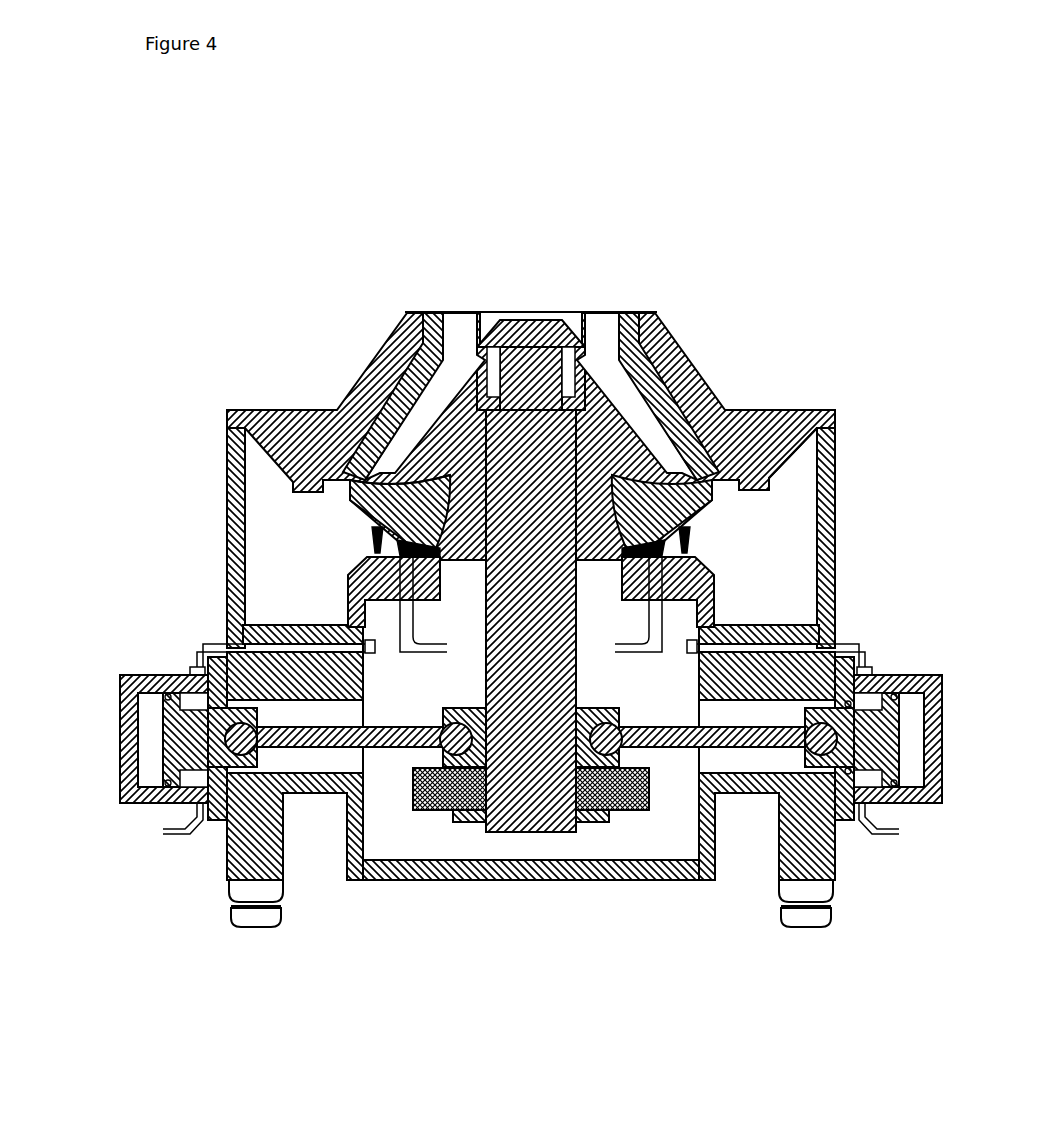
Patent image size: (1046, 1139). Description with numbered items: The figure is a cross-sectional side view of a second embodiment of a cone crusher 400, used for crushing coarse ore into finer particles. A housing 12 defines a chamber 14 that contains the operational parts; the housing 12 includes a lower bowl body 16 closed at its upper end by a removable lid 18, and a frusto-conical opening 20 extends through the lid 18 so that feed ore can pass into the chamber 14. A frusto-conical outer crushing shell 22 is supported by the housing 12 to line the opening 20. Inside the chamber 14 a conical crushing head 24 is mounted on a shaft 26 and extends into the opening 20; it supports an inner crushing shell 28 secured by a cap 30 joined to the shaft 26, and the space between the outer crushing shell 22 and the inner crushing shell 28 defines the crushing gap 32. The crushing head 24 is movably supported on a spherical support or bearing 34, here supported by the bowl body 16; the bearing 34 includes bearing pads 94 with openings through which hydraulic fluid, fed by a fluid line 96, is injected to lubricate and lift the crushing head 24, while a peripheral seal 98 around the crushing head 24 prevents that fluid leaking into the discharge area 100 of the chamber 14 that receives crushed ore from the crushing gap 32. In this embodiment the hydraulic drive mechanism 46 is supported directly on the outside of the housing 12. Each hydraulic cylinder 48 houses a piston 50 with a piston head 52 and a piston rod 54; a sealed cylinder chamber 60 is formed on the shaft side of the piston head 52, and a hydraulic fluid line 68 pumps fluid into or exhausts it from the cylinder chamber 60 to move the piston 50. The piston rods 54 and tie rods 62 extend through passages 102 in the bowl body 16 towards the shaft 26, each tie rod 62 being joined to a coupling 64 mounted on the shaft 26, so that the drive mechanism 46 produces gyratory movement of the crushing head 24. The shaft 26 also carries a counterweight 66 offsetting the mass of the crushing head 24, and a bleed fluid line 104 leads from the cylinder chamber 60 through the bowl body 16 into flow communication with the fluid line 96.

The cone crusher 400 is at (220, 196).
The crushing gap 32 is at (432, 393).
The cap 30 is at (522, 322).
The shaft 26 is at (522, 415).
The frusto-conical opening 20 is at (600, 298).
The outer crushing shell 22 is at (640, 355).
The lid 18 is at (700, 380).
The housing 12 is at (828, 467).
The chamber 14 is at (770, 550).
The discharge area 100 is at (770, 590).
The lower bowl body 16 is at (828, 620).
The inner crushing shell 28 is at (417, 447).
The bearing pads 94 is at (433, 477).
The crushing head 24 is at (400, 510).
The peripheral seal 98 is at (380, 533).
The spherical support or bearing 34 is at (370, 558).
The fluid line 96 is at (350, 592).
The bleed fluid line 104 is at (193, 663).
The piston rod 54 is at (197, 713).
The piston head 52 is at (167, 730).
The piston 50 is at (155, 753).
The hydraulic cylinder 48 is at (157, 797).
The cylinder chamber 60 is at (193, 778).
The hydraulic fluid line 68 is at (195, 815).
The passages 102 is at (356, 760).
The tie rod 62 is at (480, 755).
The coupling 64 is at (478, 770).
The counterweight 66 is at (623, 797).
The drive mechanism 46 is at (917, 810).